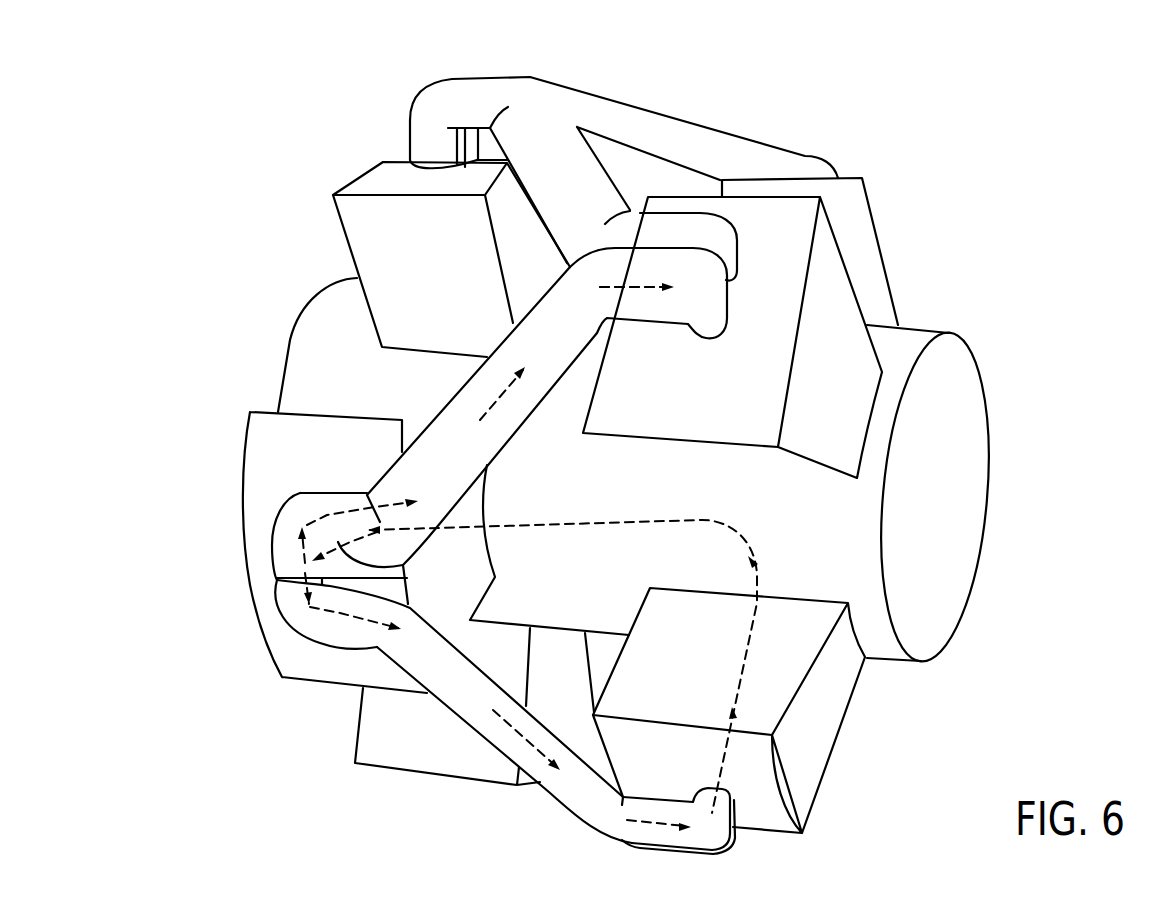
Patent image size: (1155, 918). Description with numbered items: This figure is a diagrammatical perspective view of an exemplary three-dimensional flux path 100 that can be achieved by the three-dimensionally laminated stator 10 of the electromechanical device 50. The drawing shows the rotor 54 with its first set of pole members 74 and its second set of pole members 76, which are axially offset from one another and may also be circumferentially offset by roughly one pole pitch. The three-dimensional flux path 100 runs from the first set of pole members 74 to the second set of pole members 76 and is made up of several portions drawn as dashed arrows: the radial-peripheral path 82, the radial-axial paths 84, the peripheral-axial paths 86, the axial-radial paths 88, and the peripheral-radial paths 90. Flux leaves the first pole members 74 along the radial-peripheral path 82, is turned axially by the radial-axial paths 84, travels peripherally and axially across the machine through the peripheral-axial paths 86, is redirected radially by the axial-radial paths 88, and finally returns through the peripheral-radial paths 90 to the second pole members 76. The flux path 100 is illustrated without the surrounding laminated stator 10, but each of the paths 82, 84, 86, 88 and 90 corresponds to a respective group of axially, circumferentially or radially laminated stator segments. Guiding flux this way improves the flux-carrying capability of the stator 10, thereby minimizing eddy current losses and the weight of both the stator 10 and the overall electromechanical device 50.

The three-dimensionally laminated stator 10 is at (652, 88).
The electromechanical device 50 is at (1065, 162).
The rotor 54 is at (1020, 392).
The first set of pole members 74 is at (343, 238).
The second set of pole members 76 is at (835, 302).
The radial-peripheral path 82 is at (408, 578).
The radial-axial paths 84 is at (327, 518).
The peripheral-axial paths 86 is at (483, 413).
The axial-radial paths 88 is at (632, 287).
The peripheral-radial paths 90 is at (723, 767).
The three-dimensional flux path 100 is at (532, 848).